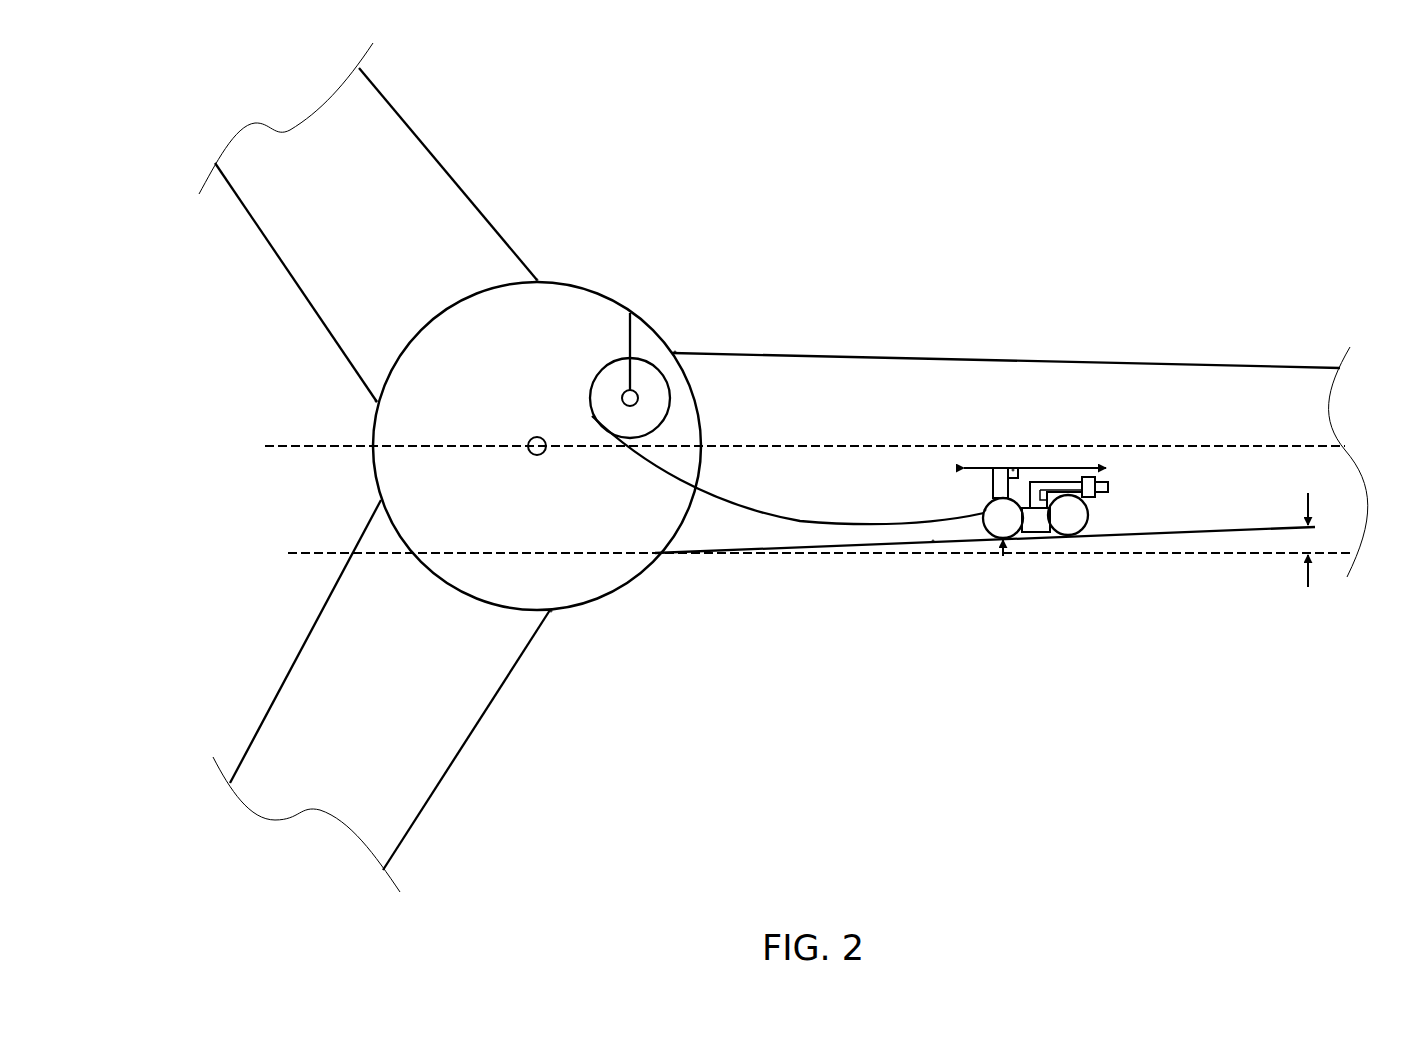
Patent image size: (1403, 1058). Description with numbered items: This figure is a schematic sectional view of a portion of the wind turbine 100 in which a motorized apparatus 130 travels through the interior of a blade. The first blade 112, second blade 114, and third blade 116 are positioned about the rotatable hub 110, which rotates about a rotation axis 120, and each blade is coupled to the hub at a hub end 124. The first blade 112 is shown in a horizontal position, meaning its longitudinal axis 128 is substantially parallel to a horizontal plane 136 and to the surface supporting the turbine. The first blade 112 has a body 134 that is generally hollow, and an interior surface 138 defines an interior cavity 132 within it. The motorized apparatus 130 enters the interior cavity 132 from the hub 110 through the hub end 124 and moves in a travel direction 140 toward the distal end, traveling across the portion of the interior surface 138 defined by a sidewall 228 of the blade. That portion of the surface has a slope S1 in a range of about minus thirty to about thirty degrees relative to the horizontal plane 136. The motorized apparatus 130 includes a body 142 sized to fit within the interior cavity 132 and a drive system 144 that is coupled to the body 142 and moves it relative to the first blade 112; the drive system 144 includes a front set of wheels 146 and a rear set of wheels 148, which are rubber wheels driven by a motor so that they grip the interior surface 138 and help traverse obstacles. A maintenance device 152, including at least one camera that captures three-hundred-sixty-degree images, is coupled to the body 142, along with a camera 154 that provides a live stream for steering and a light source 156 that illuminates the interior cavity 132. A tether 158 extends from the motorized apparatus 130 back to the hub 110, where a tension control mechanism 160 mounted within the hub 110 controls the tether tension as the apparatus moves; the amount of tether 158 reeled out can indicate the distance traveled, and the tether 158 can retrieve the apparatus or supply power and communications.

The wind turbine 100 is at (720, 226).
The rotatable hub 110 is at (617, 597).
The first blade 112 is at (1011, 442).
The second blade 114 is at (464, 193).
The third blade 116 is at (478, 726).
The rotation axis 120 is at (538, 437).
The hub end 124 is at (537, 280).
The longitudinal axis 128 is at (290, 444).
The motorized apparatus 130 is at (1009, 452).
The interior cavity 132 is at (1210, 368).
The body 134 is at (777, 352).
The horizontal plane 136 is at (312, 552).
The interior surface 138 is at (1133, 529).
The travel direction 140 is at (985, 468).
The body 142 is at (1036, 533).
The drive system 144 is at (1003, 556).
The front set of wheels 146 is at (1085, 533).
The rear set of wheels 148 is at (985, 510).
The maintenance device 152 is at (1040, 486).
The camera 154 is at (1013, 468).
The light source 156 is at (993, 490).
The tether 158 is at (795, 525).
The tension control mechanism 160 is at (673, 398).
The sidewall 228 is at (933, 541).
The slope S1 is at (1303, 540).